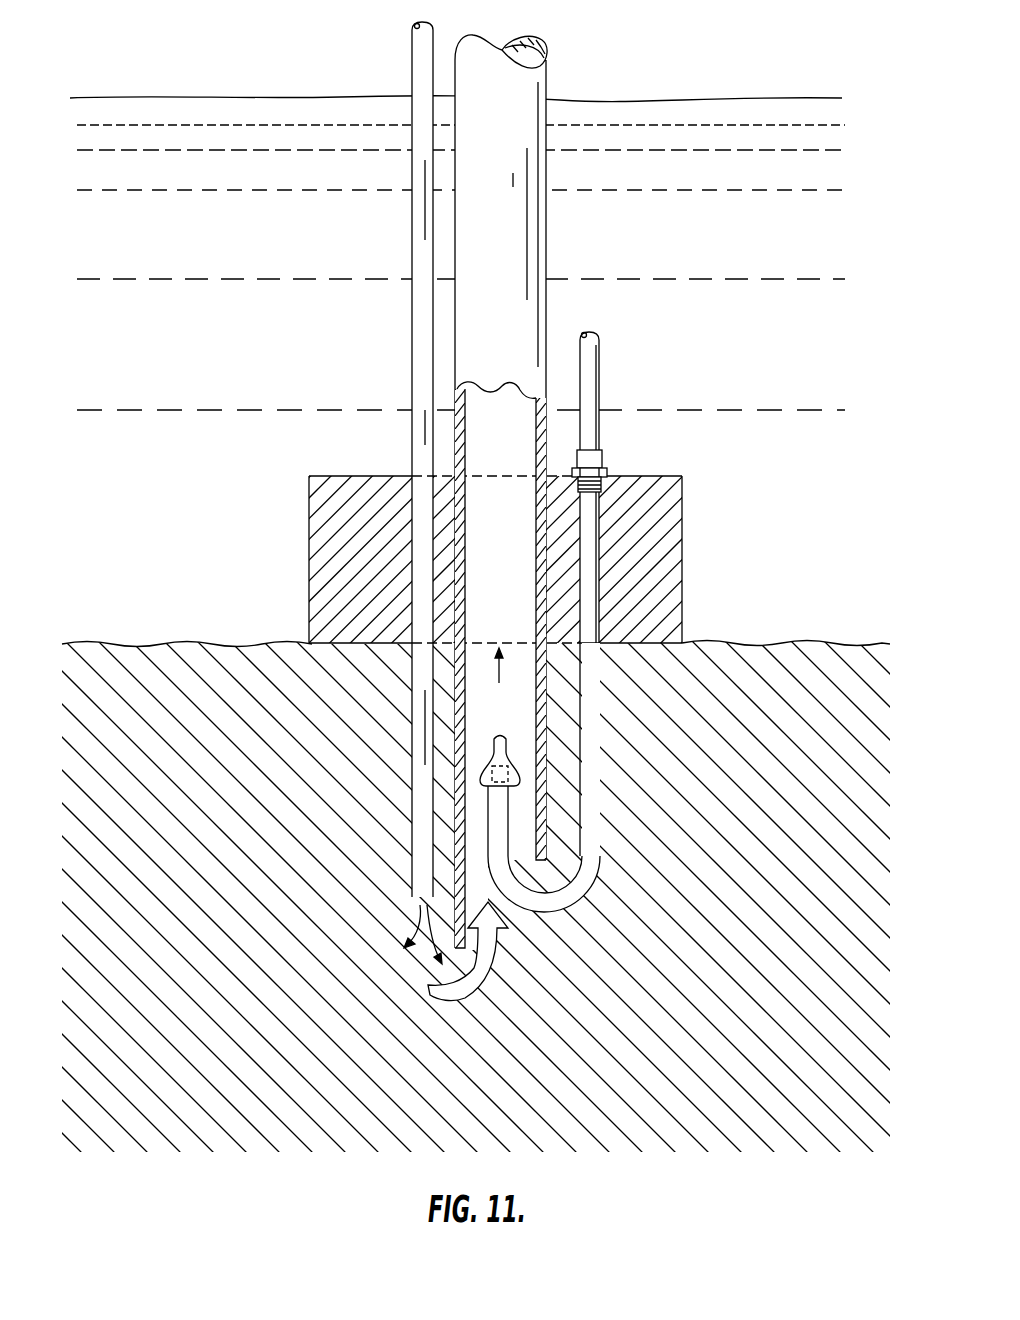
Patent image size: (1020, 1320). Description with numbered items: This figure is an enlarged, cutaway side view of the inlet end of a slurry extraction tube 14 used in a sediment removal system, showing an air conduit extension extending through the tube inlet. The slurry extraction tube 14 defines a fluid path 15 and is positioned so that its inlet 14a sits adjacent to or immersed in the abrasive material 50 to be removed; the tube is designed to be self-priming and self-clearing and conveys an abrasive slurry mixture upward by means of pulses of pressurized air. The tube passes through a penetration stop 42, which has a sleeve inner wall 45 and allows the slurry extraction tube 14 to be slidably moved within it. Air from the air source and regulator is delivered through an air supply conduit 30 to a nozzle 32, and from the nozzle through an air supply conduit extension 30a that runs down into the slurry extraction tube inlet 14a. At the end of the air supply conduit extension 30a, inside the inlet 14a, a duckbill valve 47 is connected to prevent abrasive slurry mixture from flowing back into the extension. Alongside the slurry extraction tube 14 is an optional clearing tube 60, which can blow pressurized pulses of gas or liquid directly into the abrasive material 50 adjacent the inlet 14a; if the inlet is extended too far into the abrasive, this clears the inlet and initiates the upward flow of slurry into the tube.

The slurry extraction tube 14 is at (486, 491).
The inlet 14a is at (481, 951).
The fluid path 15 is at (465, 445).
The air supply conduit 30 is at (580, 635).
The air supply conduit extension 30a is at (563, 910).
The nozzle 32 is at (602, 460).
The penetration stop 42 is at (333, 525).
The sleeve inner wall 45 is at (536, 494).
The duckbill valve 47 is at (490, 760).
The abrasive material 50 is at (173, 636).
The clearing tube 60 is at (410, 240).